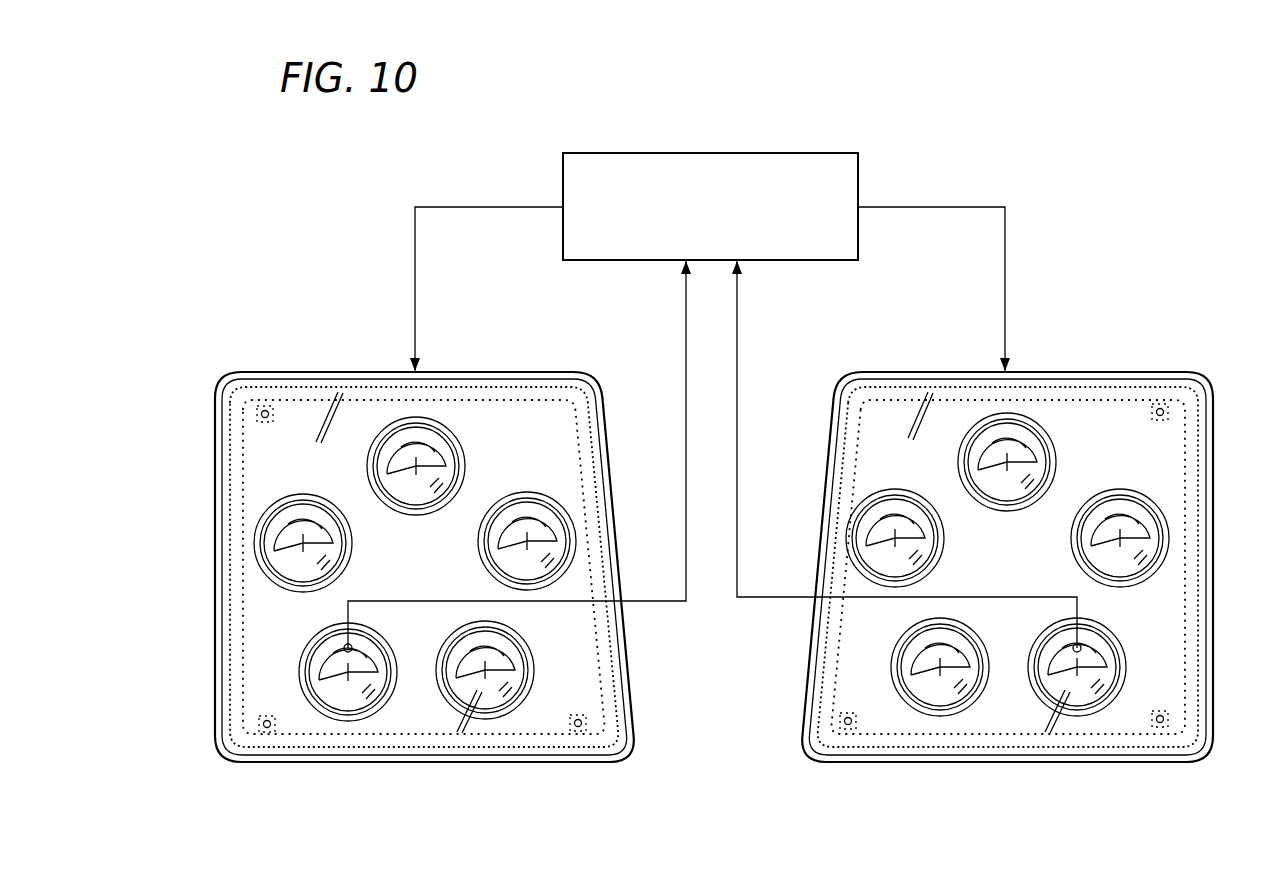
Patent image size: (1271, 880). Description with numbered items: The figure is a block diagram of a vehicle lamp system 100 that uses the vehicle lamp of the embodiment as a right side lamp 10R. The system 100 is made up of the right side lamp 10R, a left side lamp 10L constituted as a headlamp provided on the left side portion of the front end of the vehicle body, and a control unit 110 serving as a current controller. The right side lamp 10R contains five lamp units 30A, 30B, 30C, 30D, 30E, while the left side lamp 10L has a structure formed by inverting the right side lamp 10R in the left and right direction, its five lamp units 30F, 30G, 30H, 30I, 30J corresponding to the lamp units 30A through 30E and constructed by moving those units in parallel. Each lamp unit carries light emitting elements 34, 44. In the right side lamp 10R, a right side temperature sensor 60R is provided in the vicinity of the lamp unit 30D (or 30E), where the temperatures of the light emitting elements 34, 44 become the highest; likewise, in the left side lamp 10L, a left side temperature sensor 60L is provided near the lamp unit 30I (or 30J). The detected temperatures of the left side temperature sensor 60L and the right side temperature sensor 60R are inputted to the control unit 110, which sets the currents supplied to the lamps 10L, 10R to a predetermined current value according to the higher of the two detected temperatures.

The vehicle lamp system 100 is at (1127, 220).
The control unit 110 is at (713, 152).
The right side lamp 10R is at (299, 350).
The left side lamp 10L is at (1149, 349).
The lamp unit 30A is at (442, 420).
The lamp unit 30B is at (268, 502).
The lamp unit 30C is at (556, 496).
The lamp unit 30D is at (318, 718).
The lamp unit 30E is at (510, 716).
The lamp unit 30F is at (1040, 420).
The lamp unit 30G is at (1150, 496).
The lamp unit 30H is at (862, 500).
The lamp unit 30I is at (1102, 716).
The lamp unit 30J is at (910, 718).
The light emitting element 34 is at (430, 460).
The light emitting element 44 is at (338, 668).
The right side temperature sensor 60R is at (355, 650).
The left side temperature sensor 60L is at (1070, 650).